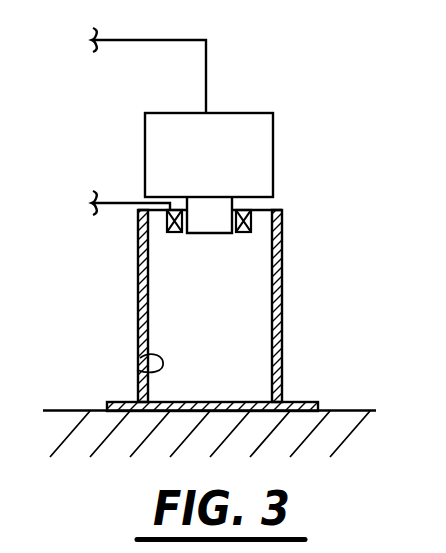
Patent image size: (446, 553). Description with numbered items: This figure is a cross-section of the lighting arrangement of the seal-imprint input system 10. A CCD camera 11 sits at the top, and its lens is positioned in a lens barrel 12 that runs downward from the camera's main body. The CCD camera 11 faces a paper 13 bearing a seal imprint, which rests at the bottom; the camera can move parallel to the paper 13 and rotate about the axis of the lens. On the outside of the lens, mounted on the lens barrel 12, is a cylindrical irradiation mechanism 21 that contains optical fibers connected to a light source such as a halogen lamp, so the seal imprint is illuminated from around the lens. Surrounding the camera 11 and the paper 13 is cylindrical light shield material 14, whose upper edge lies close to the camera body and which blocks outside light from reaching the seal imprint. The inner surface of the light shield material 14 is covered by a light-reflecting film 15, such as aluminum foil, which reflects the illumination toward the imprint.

The seal-imprint input system 10 is at (298, 214).
The CCD camera 11 is at (246, 112).
The lens barrel 12 is at (197, 207).
The paper 13 is at (300, 402).
The light shield material 14 is at (130, 297).
The film 15 is at (137, 370).
The cylindrical irradiation mechanism 21 is at (168, 221).